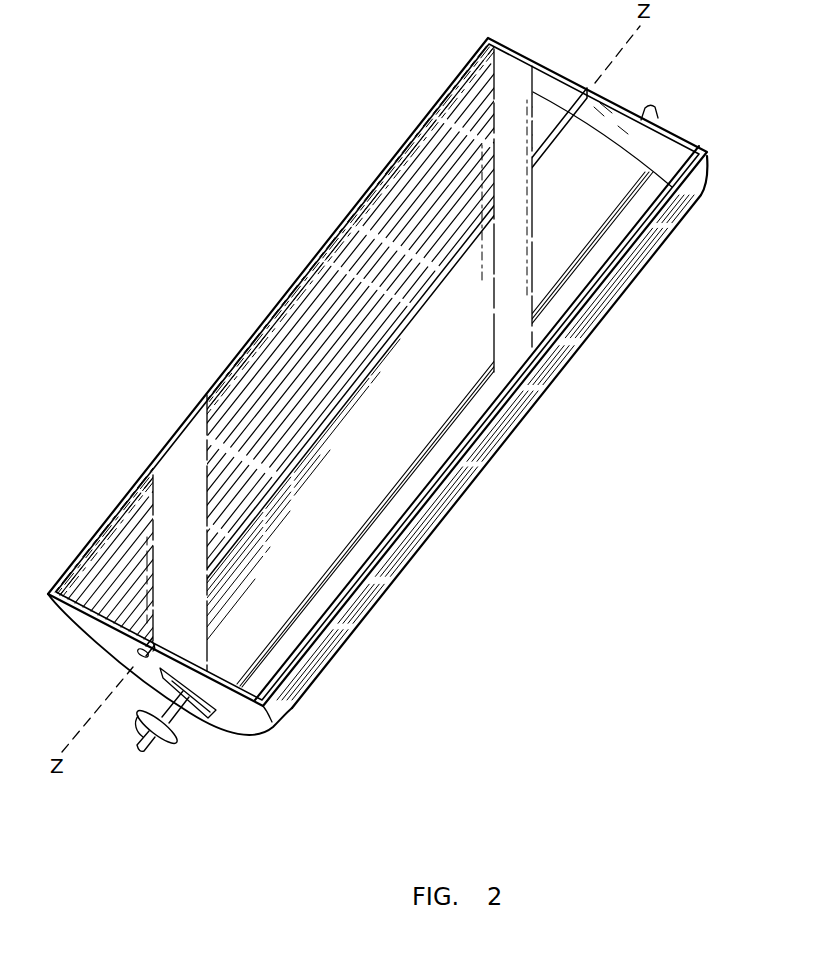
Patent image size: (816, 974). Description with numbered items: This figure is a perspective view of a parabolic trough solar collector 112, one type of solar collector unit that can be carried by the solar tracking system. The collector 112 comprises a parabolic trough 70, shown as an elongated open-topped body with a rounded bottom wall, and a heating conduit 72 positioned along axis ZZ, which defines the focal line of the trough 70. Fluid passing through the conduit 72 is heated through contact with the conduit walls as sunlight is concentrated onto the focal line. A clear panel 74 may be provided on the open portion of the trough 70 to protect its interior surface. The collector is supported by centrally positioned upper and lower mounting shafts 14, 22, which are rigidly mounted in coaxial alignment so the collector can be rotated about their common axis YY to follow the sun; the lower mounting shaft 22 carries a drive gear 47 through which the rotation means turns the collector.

The upper mounting shaft 14 is at (657, 113).
The lower mounting shaft 22 is at (182, 717).
The drive gear 47 is at (170, 743).
The parabolic trough 70 is at (292, 703).
The heating conduit 72 is at (262, 503).
The clear panel 74 is at (552, 313).
The parabolic trough solar collector 112 is at (377, 390).